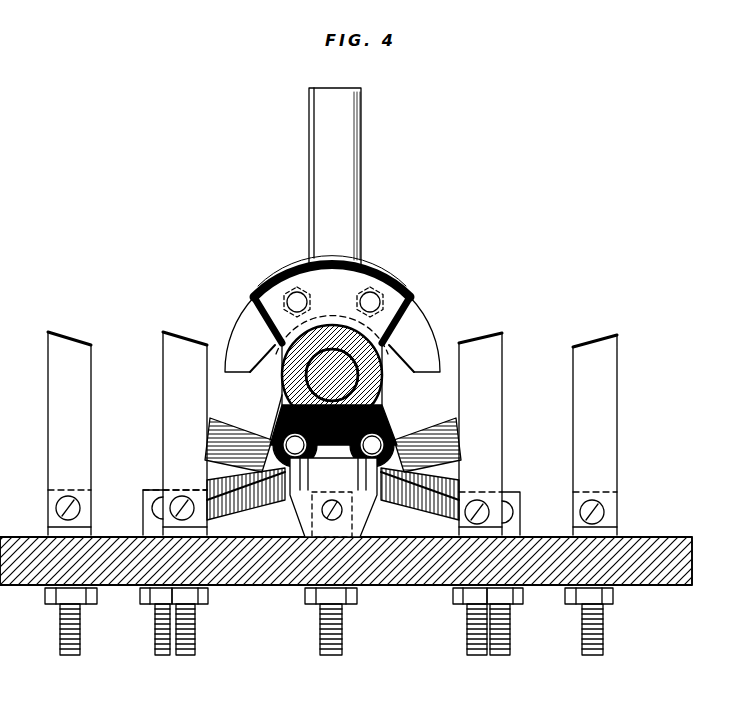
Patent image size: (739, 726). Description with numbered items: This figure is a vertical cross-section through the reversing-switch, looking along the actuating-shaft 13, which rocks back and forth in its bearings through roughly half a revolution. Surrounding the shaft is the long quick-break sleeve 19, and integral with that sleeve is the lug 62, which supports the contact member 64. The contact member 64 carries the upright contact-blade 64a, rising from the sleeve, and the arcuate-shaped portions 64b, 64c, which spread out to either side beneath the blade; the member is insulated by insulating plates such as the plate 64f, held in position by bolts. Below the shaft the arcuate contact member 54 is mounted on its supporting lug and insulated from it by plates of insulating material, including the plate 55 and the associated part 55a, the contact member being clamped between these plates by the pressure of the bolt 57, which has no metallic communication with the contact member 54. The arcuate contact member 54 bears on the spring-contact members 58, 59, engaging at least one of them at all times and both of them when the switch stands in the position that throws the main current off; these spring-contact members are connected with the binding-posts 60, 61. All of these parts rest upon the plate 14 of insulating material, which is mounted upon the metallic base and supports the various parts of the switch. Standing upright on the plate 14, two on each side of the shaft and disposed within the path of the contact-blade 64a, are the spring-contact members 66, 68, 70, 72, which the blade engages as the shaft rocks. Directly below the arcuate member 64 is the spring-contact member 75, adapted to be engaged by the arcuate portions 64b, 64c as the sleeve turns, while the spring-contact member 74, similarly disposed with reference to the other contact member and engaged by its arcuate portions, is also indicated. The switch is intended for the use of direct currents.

The plate of insulating material 14 is at (684, 586).
The spring-contact member 74 is at (82, 636).
The spring-contact member 66 is at (69, 433).
The spring-contact member 68 is at (185, 433).
The spring-contact member 70 is at (480, 434).
The spring-contact member 72 is at (595, 435).
The binding-post 60 is at (156, 530).
The binding-post 61 is at (520, 530).
The arcuate contact member 54 is at (258, 432).
The plate of insulating material 55 is at (402, 442).
The arm extension 55a is at (280, 392).
The spring-contact member 58 is at (222, 514).
The spring-contact member 59 is at (440, 512).
The bolt 57 is at (400, 432).
The spring-contact member 75 is at (349, 540).
The contact member 64 is at (364, 270).
The contact-blade 64a is at (335, 178).
The arcuate-shaped portion 64b is at (250, 334).
The arcuate-shaped portion 64c is at (414, 334).
The insulating-plate 64f is at (398, 294).
The lug 62 is at (333, 301).
The actuating-shaft 13 is at (346, 372).
The quick-break sleeve 19 is at (370, 392).